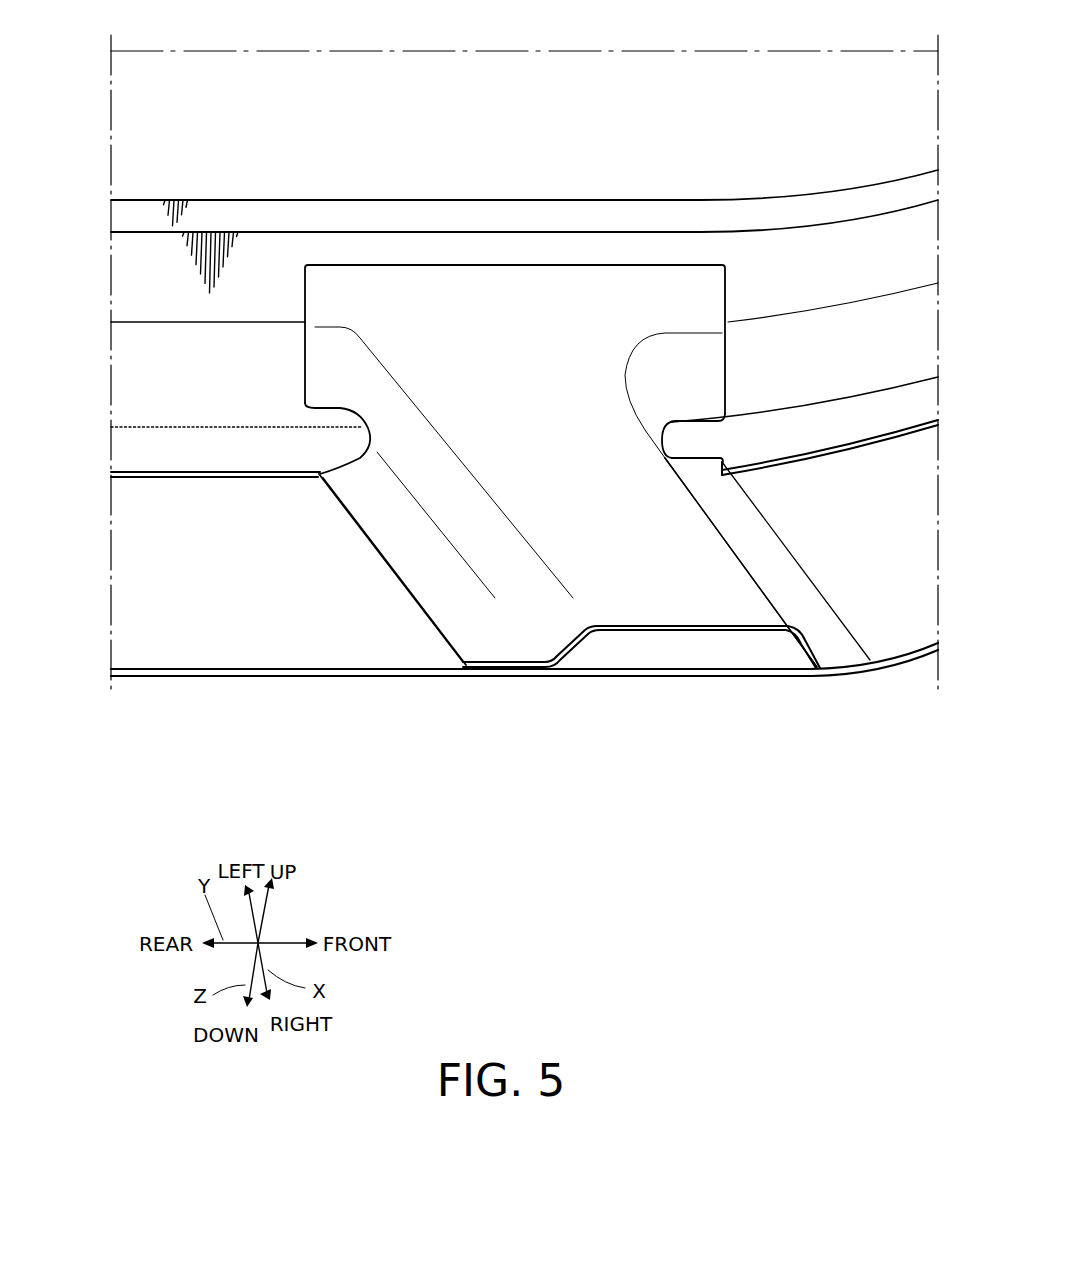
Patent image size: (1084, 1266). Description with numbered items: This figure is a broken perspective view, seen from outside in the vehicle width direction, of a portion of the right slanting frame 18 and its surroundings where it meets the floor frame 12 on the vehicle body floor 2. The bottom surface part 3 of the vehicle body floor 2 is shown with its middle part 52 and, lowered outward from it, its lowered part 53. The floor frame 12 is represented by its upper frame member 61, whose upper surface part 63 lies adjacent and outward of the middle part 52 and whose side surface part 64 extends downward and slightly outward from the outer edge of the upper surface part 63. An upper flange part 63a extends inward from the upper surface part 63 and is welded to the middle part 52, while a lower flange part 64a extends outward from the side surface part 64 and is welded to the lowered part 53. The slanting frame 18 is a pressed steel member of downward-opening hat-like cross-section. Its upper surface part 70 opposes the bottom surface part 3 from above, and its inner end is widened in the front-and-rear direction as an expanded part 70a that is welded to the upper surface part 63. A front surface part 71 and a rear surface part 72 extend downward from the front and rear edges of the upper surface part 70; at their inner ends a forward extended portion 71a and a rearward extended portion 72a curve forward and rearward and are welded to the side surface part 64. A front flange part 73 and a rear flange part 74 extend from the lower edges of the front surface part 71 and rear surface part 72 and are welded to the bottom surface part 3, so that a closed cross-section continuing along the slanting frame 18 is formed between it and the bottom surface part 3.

The vehicle body floor 2 is at (160, 684).
The bottom surface part 3 is at (501, 131).
The floor frame 12 is at (623, 200).
The slanting frame 18 is at (745, 546).
The middle part 52 is at (310, 62).
The lowered part 53 is at (226, 645).
The upper frame member 61 is at (675, 225).
The upper surface part 63 is at (128, 283).
The upper flange part 63a is at (130, 213).
The side surface part 64 is at (128, 368).
The lower flange part 64a is at (142, 458).
The upper surface part 70 is at (697, 637).
The expanded part 70a is at (422, 280).
The front surface part 71 is at (812, 645).
The forward extended portion 71a is at (700, 373).
The rear surface part 72 is at (587, 645).
The rearward extended portion 72a is at (322, 375).
The front flange part 73 is at (793, 593).
The rear flange part 74 is at (413, 596).